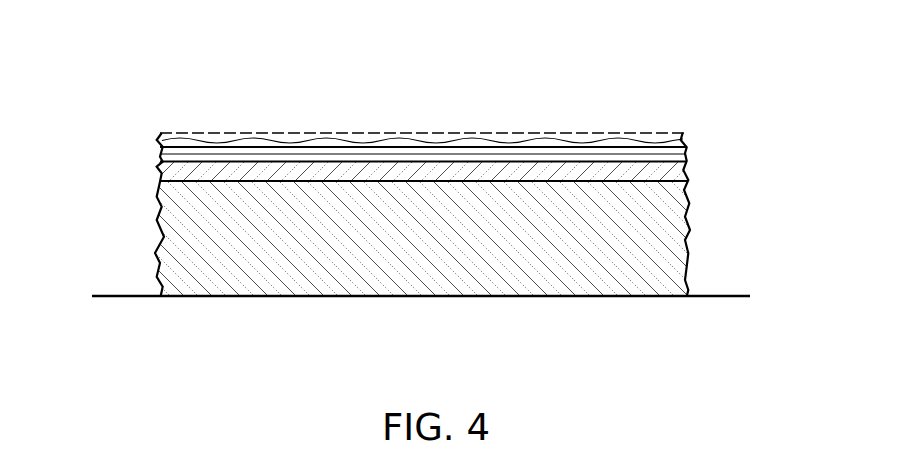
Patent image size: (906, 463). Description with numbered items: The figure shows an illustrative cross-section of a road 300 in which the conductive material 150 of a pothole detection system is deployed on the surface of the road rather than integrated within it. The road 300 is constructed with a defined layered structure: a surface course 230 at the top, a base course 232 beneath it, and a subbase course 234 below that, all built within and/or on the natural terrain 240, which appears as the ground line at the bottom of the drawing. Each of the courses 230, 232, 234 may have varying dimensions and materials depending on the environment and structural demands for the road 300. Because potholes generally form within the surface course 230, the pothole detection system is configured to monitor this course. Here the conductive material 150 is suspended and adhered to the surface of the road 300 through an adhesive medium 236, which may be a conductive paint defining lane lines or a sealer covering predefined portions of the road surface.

The road 300 is at (406, 169).
The conductive material 150 is at (633, 141).
The surface course 230 is at (687, 154).
The base course 232 is at (687, 169).
The subbase course 234 is at (689, 213).
The adhesive medium 236 is at (547, 133).
The natural terrain 240 is at (700, 295).